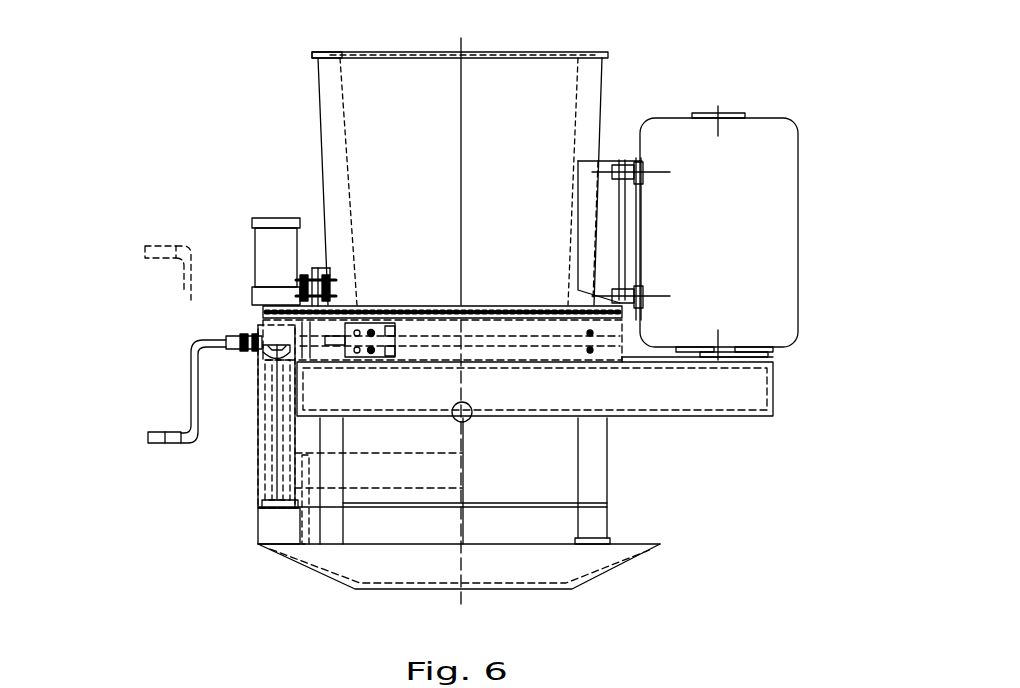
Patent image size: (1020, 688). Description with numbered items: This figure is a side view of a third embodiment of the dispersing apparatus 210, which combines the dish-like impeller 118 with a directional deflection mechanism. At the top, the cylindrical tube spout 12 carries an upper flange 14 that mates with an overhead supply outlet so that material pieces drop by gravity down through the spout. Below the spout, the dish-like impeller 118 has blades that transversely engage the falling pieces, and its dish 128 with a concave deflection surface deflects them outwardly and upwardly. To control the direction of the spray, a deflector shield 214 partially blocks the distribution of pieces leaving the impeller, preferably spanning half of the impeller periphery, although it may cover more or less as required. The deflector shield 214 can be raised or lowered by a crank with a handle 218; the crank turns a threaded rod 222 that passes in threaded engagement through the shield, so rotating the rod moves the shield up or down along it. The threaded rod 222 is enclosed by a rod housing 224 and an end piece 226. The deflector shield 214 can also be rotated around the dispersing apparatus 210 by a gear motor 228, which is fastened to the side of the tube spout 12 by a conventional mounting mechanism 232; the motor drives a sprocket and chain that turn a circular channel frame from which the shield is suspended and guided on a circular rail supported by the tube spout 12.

The tube spout 12 is at (475, 153).
The upper flange 14 is at (288, 82).
The dish-like impeller 118 is at (530, 481).
The dish 128 is at (511, 586).
The dispersing apparatus 210 is at (710, 187).
The deflector shield 214 is at (535, 412).
The handle 218 is at (153, 344).
The threaded rod 222 is at (209, 436).
The rod housing 224 is at (211, 416).
The end piece 226 is at (214, 542).
The gear motor 228 is at (220, 237).
The mounting mechanism 232 is at (291, 238).